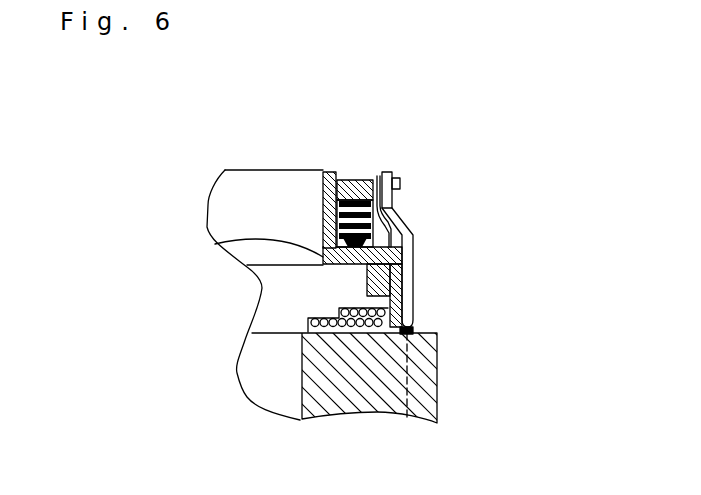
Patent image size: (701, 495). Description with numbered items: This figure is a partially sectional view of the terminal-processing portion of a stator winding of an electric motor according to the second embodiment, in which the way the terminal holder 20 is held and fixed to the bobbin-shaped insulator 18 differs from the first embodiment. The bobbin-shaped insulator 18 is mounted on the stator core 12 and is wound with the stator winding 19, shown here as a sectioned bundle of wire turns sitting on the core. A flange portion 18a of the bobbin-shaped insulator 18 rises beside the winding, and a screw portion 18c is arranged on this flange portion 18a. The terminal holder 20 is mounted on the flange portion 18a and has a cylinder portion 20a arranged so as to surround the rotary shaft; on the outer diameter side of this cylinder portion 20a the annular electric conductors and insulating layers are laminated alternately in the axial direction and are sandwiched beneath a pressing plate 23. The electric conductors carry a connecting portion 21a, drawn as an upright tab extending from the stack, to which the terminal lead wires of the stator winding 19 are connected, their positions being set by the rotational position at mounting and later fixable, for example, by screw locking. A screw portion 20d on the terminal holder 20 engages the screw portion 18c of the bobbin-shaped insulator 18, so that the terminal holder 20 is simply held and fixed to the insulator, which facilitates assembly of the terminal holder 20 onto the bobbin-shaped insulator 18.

The stator core 12 is at (395, 383).
The bobbin-shaped insulator 18 is at (413, 334).
The flange portion 18a is at (413, 309).
The screw portion 18c is at (413, 282).
The stator winding 19 is at (340, 340).
The terminal holder 20 is at (215, 244).
The cylinder portion 20a is at (330, 178).
The screw portion 20d is at (408, 235).
The connecting portion 21a is at (400, 187).
The pressing plate 23 is at (358, 182).